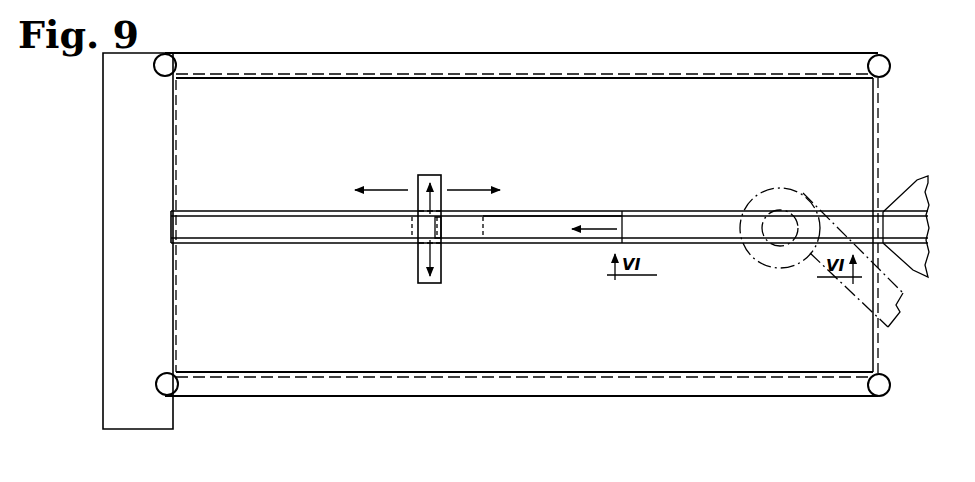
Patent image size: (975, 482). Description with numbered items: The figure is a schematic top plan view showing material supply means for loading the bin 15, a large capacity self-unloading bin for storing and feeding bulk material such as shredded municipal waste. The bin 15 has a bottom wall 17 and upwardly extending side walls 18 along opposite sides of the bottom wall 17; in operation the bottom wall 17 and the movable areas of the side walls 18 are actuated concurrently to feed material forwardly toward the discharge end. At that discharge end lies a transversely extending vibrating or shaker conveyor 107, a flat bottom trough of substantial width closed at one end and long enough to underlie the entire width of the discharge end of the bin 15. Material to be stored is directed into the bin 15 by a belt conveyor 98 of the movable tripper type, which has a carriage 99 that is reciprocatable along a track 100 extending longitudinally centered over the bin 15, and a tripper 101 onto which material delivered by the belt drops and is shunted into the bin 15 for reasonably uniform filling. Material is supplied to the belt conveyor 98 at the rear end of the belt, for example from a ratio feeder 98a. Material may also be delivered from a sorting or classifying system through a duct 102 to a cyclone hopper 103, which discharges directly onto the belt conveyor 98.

The bin 15 is at (197, 46).
The bottom wall 17 is at (290, 163).
The side walls 18 is at (408, 78).
The belt conveyor 98 is at (313, 228).
The ratio feeder 98a is at (915, 178).
The carriage 99 is at (456, 245).
The track 100 is at (540, 258).
The tripper 101 is at (418, 283).
The duct 102 is at (856, 297).
The cyclone hopper 103 is at (771, 188).
The shaker conveyor 107 is at (103, 195).